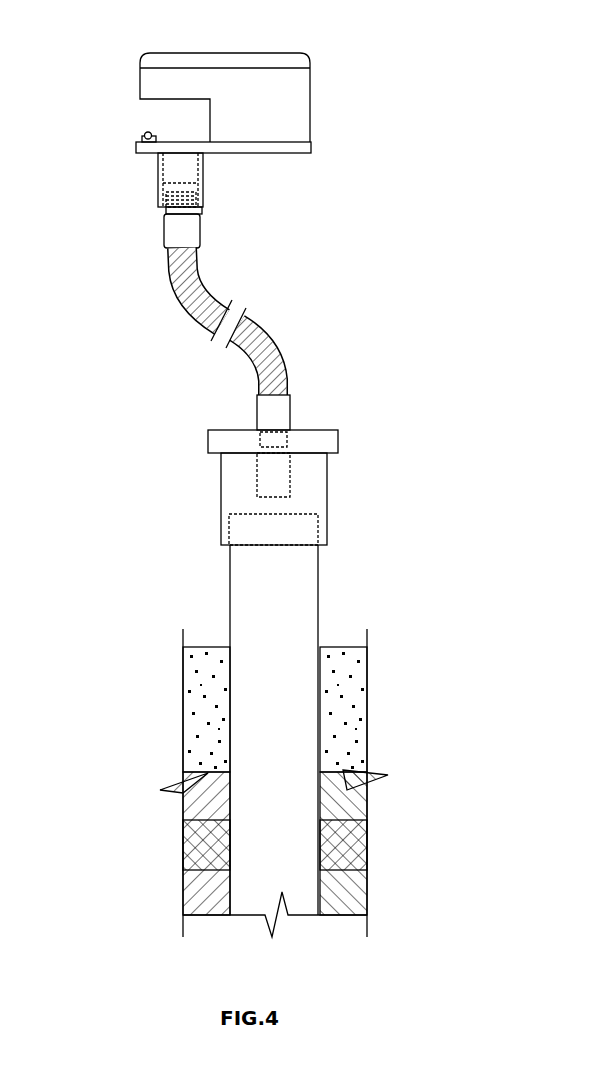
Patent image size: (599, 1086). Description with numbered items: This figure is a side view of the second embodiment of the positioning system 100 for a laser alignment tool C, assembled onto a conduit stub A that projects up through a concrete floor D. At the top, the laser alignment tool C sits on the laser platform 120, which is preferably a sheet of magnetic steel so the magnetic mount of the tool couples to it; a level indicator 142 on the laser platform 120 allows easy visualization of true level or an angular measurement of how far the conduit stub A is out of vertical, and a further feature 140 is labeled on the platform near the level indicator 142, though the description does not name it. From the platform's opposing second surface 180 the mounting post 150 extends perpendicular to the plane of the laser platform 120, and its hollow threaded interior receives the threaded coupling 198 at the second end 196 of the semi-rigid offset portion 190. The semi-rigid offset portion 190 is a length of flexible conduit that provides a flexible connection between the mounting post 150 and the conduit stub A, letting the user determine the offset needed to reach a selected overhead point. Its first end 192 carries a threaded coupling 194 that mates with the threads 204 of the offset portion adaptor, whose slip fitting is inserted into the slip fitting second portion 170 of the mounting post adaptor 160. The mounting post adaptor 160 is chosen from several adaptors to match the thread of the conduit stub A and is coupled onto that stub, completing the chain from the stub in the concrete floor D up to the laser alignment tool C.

The positioning system 100 is at (116, 80).
The laser platform 120 is at (272, 92).
The laser alignment tool C is at (263, 52).
The base plate opening 140 is at (183, 142).
The level indicator 142 is at (140, 138).
The mounting post 150 is at (203, 163).
The second surface 180 is at (285, 153).
The threaded coupling 198 is at (195, 211).
The second end 196 is at (198, 240).
The semi-rigid offset portion 190 is at (255, 320).
The first end 192 is at (290, 405).
The threaded coupling 194 is at (267, 442).
The threads 204 is at (230, 428).
The second portion 170 is at (327, 428).
The mounting post adaptor 160 is at (327, 498).
The conduit stub A is at (307, 585).
The concrete floor D is at (353, 687).